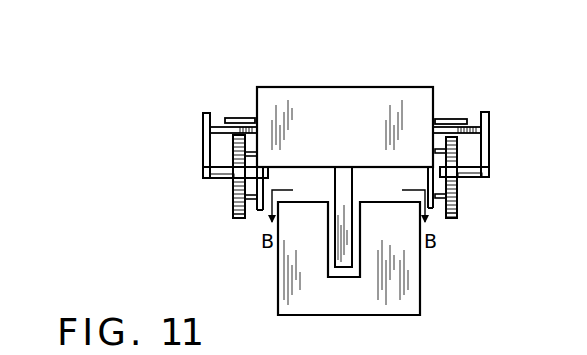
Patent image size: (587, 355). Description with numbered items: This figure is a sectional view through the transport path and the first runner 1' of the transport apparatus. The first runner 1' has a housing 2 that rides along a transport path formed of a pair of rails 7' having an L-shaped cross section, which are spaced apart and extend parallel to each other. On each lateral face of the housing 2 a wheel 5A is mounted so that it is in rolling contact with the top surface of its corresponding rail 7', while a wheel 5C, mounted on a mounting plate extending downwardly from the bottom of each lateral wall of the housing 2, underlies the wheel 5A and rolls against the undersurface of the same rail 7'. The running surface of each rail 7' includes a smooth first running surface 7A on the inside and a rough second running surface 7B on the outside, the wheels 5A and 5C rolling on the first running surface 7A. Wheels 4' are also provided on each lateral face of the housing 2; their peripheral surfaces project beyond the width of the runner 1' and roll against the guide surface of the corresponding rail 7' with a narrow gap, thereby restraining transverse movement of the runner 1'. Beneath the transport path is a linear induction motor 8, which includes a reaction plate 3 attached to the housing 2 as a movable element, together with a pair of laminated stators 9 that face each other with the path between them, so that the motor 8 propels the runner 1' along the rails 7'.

The first runner 1' is at (345, 126).
The housing 2 is at (401, 102).
The reaction plate 3 is at (350, 266).
The wheels 4' is at (346, 126).
The wheel 5A is at (237, 148).
The wheel 5C is at (235, 222).
The rail 7' is at (347, 152).
The first running surface 7A is at (228, 182).
The second running surface 7B is at (217, 181).
The linear induction motor 8 is at (422, 316).
The stator 9 is at (407, 283).